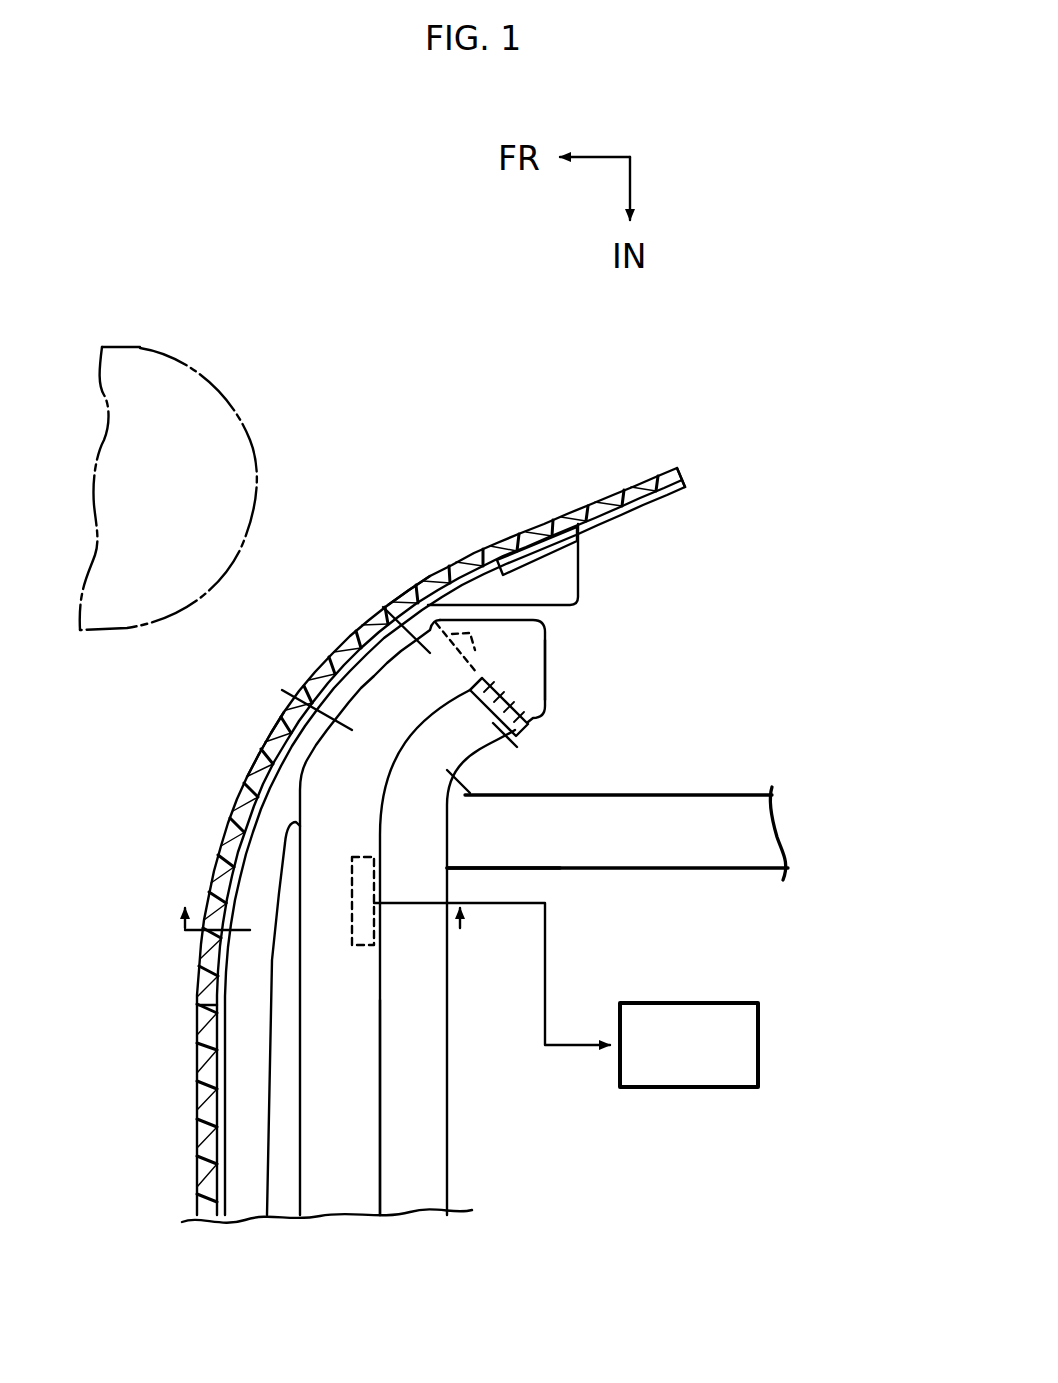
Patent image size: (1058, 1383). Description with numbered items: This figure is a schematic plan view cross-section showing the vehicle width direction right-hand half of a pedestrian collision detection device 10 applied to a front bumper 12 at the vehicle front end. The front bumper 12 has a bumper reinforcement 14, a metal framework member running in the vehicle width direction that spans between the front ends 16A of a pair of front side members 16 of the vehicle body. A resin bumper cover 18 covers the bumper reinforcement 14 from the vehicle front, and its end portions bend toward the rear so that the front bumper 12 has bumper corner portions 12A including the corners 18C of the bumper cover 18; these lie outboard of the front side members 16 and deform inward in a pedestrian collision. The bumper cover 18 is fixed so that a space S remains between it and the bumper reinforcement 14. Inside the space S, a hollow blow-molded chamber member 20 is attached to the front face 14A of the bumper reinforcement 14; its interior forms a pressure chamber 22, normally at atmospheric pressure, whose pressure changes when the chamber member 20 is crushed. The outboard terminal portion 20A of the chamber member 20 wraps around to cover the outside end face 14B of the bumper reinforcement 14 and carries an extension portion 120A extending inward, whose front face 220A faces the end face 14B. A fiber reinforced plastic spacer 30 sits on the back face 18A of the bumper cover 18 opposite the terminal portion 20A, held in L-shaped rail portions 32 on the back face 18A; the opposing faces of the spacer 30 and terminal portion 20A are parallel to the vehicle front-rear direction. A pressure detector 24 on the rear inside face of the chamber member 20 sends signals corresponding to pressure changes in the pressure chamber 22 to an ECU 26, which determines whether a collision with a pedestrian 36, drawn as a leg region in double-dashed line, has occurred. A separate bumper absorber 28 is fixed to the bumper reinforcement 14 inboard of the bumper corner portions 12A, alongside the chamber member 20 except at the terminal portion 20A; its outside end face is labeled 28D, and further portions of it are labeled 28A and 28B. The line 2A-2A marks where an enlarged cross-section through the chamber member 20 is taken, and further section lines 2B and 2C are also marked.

The pedestrian collision detection device 10 is at (805, 931).
The front bumper 12 is at (148, 1121).
The bumper corner portion 12A is at (399, 523).
The bumper reinforcement 14 is at (455, 1142).
The front face 14A is at (378, 1193).
The vehicle width direction outside end face 14B is at (547, 705).
The front side member 16 is at (675, 787).
The front end 16A is at (458, 838).
The bumper cover 18 is at (193, 1065).
The back face 18A is at (302, 789).
The corner 18C is at (409, 586).
The chamber member 20 is at (278, 1169).
The terminal portion 20A is at (526, 634).
The pressure chamber 22 is at (602, 672).
The pressure detector 24 is at (352, 940).
The ECU 26 is at (703, 1000).
The bumper absorber 28 is at (258, 800).
The absorber middle portion 28A is at (295, 742).
The absorber lower portion 28B is at (240, 1002).
The vehicle width direction outside end face 28D is at (495, 653).
The spacer 30 is at (591, 557).
The rail portion 32 is at (533, 548).
The pedestrian 36 is at (150, 347).
The extension portion 120A is at (547, 680).
The front face 220A is at (471, 686).
The space S is at (266, 762).
The section line 2A- 2A is at (486, 934).
The section line 2B is at (289, 665).
The section line 2C is at (394, 584).